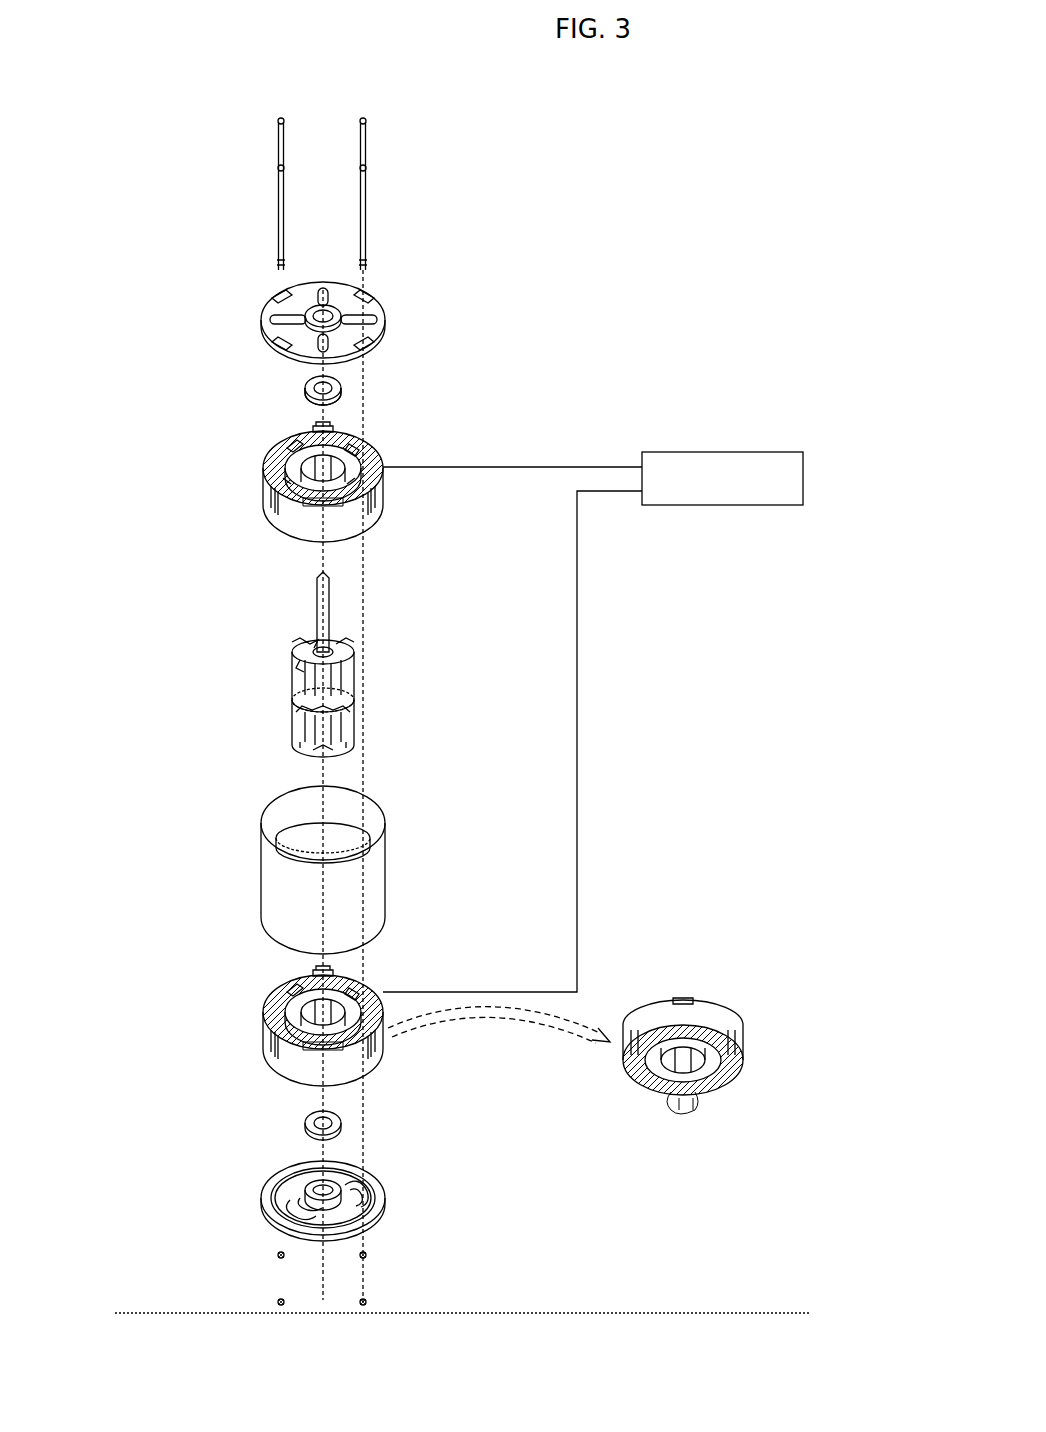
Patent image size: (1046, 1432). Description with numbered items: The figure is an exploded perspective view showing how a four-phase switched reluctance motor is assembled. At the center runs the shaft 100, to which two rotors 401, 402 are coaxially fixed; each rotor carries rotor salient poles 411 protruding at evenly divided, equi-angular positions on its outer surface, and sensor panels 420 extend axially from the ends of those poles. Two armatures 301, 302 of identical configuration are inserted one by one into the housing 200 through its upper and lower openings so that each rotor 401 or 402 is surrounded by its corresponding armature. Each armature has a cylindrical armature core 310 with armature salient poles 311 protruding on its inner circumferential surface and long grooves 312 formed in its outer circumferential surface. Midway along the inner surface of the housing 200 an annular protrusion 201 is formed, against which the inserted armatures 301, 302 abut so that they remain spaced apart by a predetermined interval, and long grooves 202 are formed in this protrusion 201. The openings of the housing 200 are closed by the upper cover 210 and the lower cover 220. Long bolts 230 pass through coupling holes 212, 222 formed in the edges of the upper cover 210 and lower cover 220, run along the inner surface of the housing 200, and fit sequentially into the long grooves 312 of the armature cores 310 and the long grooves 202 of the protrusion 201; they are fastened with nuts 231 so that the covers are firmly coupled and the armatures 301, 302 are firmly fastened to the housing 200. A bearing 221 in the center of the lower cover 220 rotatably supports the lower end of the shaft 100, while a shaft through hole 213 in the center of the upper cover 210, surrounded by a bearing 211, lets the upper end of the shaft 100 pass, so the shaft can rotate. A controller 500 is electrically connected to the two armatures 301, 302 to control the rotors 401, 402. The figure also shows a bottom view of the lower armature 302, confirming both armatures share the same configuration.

The shaft 100 is at (312, 608).
The housing 200 is at (292, 869).
The annular protrusion 201 is at (350, 835).
The long grooves 202 is at (352, 842).
The upper cover 210 is at (302, 315).
The bearing 211 is at (305, 392).
The coupling holes 212 is at (372, 350).
The shaft through hole 213 is at (265, 305).
The lower cover 220 is at (314, 1201).
The bearing 221 is at (305, 1127).
The coupling holes 222 is at (380, 1224).
The long bolts 230 is at (370, 213).
The nuts 231 is at (368, 1302).
The armature 301 is at (315, 471).
The armature 302 is at (300, 980).
The armature core 310 is at (262, 508).
The armature salient poles 311 is at (300, 435).
The long grooves 312 is at (372, 520).
The rotor 401 is at (268, 683).
The rotor 402 is at (268, 735).
The rotor salient poles 411 is at (345, 688).
The sensor panels 420 is at (350, 650).
The controller 500 is at (722, 452).